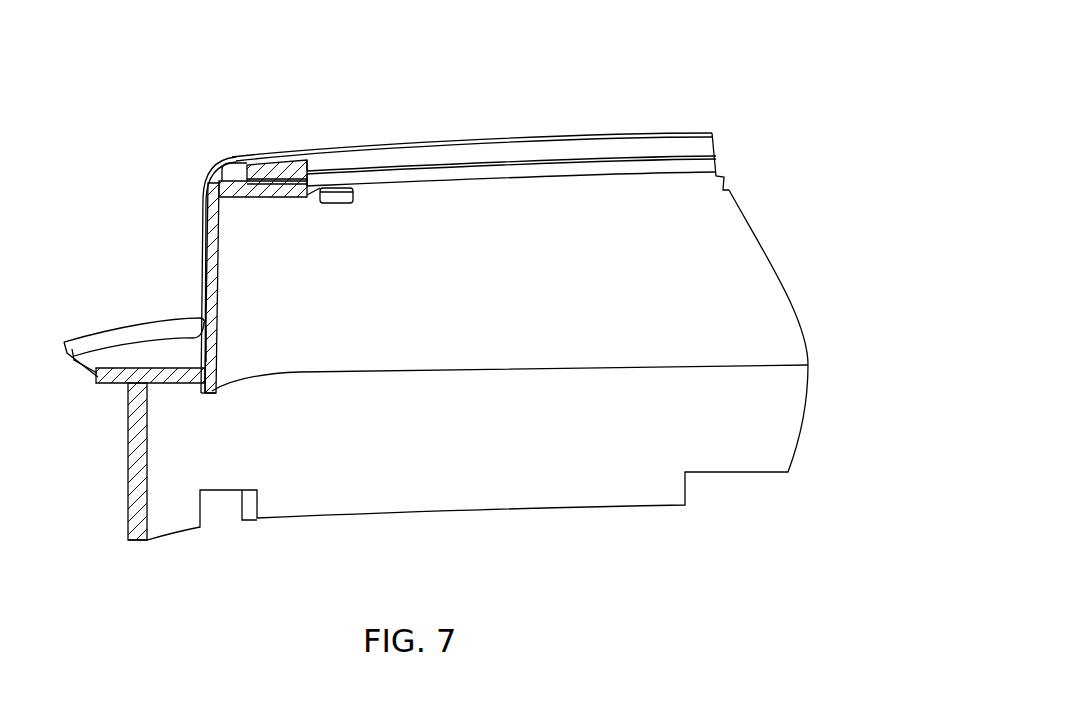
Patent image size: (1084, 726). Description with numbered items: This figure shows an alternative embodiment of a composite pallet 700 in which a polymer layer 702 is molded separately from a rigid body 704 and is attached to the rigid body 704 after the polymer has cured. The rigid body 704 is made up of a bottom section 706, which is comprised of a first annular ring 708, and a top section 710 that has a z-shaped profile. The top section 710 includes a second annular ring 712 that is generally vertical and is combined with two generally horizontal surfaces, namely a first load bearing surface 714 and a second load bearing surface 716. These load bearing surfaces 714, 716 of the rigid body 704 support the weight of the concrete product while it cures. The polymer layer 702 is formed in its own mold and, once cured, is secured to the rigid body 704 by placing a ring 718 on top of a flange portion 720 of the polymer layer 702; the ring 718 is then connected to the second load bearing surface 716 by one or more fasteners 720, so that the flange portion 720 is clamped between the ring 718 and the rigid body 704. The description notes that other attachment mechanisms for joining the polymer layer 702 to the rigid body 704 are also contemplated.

The composite pallet 700 is at (616, 67).
The polymer layer 702 is at (200, 230).
The rigid body 704 is at (261, 364).
The bottom section 706 is at (94, 531).
The first annular ring 708 is at (148, 476).
The top section 710 is at (236, 256).
The second annular ring 712 is at (208, 358).
The first load bearing surface 714 is at (98, 378).
The second load bearing surface 716 is at (278, 198).
The ring 718 is at (410, 158).
The flange portion 720 is at (275, 180).